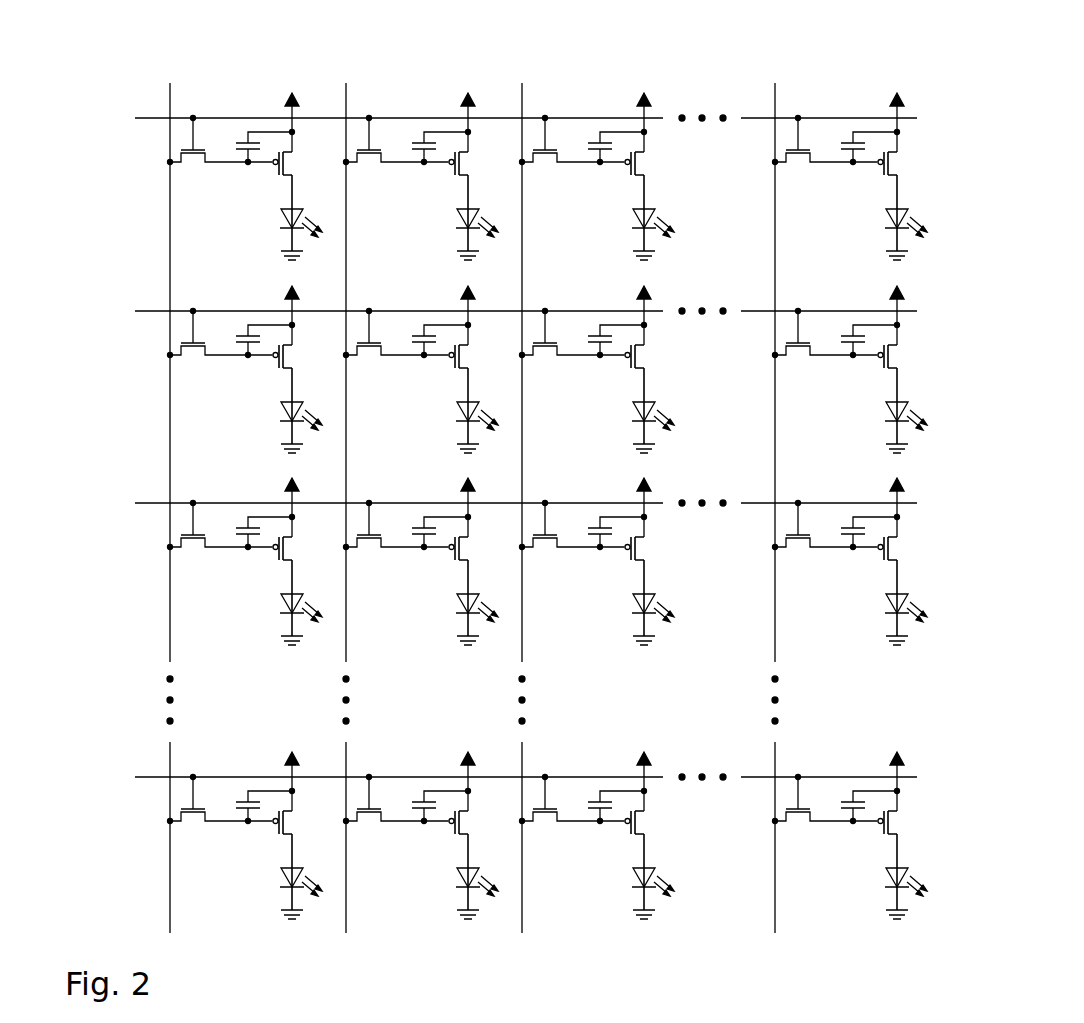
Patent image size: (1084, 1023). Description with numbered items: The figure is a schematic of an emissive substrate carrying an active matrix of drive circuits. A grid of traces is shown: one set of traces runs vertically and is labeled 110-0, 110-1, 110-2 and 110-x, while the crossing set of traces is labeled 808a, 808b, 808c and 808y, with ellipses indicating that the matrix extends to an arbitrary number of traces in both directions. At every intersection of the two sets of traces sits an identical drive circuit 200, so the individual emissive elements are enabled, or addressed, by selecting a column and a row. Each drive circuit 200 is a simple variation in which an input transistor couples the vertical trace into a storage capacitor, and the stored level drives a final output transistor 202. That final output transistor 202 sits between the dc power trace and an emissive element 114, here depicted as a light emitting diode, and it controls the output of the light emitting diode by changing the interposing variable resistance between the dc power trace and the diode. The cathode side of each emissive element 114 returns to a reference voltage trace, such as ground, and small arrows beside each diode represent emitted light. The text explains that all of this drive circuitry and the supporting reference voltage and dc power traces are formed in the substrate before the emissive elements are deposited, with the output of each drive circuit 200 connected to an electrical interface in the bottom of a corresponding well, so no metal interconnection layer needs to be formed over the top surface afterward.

The drive circuit 200 is at (246, 48).
The row 110-0 is at (168, 495).
The row 110-1 is at (346, 495).
The row 110-2 is at (522, 495).
The row 110-x is at (775, 495).
The row line 808a is at (492, 118).
The row line 808b is at (492, 311).
The row line 808c is at (492, 503).
The row line 808y is at (492, 777).
The final output transistor 202 is at (274, 172).
The emissive element 114 is at (288, 208).